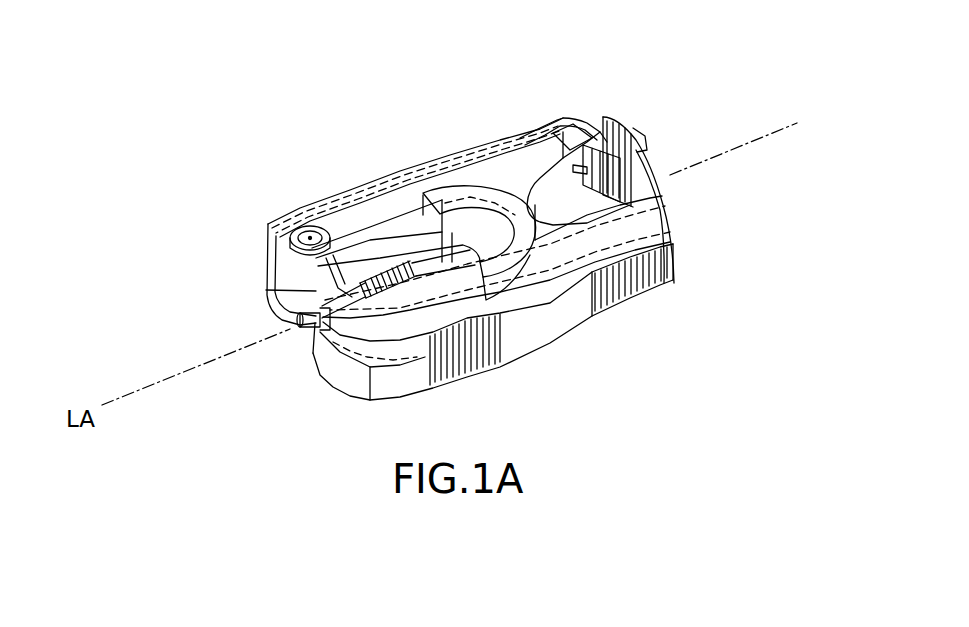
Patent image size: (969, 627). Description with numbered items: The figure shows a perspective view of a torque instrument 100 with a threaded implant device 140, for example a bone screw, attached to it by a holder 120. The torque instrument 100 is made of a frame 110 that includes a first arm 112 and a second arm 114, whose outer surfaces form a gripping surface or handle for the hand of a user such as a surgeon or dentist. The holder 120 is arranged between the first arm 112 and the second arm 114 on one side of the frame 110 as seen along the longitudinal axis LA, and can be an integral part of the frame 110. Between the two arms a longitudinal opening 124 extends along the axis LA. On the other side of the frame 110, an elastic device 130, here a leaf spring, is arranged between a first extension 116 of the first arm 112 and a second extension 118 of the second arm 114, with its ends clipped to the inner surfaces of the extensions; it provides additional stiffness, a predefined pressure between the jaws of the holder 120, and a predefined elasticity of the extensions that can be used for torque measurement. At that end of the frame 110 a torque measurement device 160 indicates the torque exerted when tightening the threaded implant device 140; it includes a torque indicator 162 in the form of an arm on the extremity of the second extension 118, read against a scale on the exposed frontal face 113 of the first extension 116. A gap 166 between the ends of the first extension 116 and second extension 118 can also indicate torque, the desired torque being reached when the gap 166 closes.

The torque instrument 100 is at (262, 142).
The frame 110 is at (682, 257).
The first arm 112 is at (413, 147).
The frontal face or surface 113 is at (576, 123).
The second arm 114 is at (557, 337).
The first extension 116 is at (517, 137).
The second extension 118 is at (650, 287).
The holder 120 is at (273, 293).
The longitudinal opening 124 is at (417, 252).
The elastic device 130 is at (597, 190).
The threaded implant device 140 is at (300, 333).
The torque measurement device 160 is at (672, 187).
The torque indicator 162 is at (663, 208).
The gap 166 is at (637, 137).